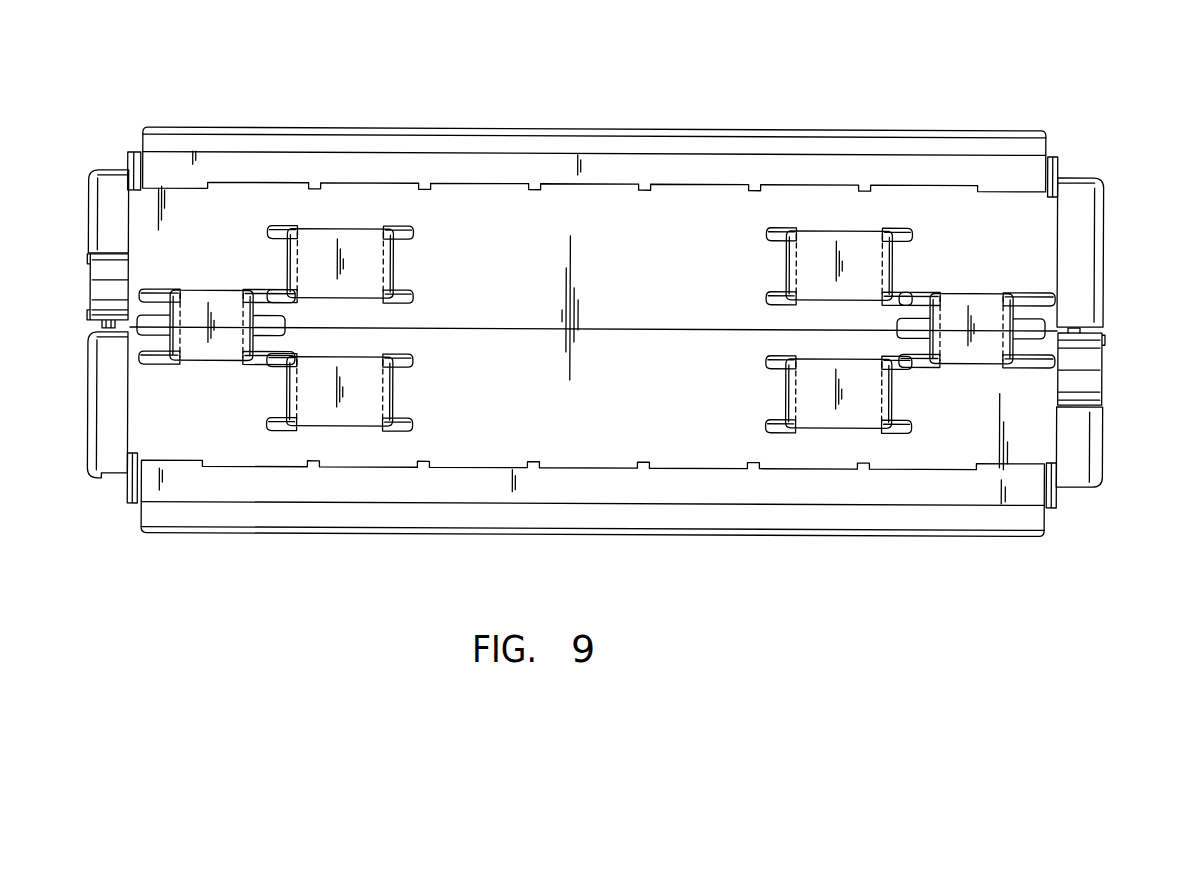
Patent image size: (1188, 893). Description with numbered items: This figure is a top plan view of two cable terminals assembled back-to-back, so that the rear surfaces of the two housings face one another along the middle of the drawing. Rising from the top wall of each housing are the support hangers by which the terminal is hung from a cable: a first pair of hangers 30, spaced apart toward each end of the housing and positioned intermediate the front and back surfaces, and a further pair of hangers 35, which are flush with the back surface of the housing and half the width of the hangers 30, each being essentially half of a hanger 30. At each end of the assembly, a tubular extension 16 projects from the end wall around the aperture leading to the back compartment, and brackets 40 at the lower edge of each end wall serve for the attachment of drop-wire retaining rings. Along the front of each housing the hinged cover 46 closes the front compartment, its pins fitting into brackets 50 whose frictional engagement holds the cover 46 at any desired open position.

The tubular extension 16 is at (110, 288).
The first pair of hangers 30 is at (345, 229).
The further pair of hangers 35 is at (230, 292).
The brackets 40 is at (97, 218).
The hinged cover 46 is at (885, 148).
The brackets 50 is at (133, 152).